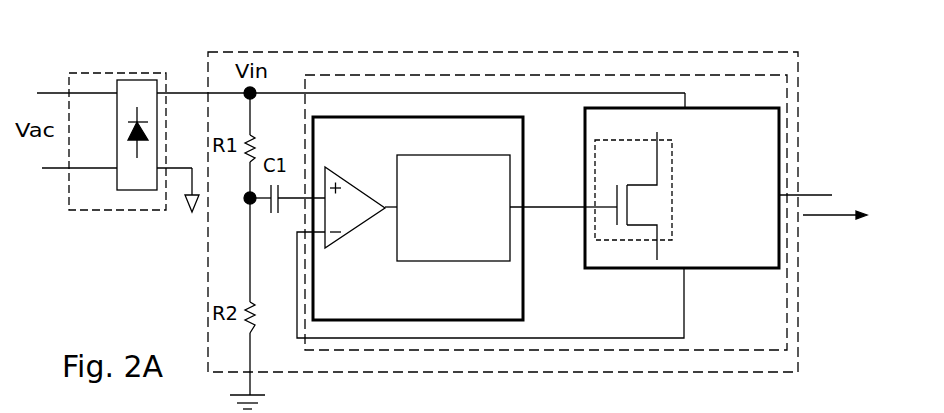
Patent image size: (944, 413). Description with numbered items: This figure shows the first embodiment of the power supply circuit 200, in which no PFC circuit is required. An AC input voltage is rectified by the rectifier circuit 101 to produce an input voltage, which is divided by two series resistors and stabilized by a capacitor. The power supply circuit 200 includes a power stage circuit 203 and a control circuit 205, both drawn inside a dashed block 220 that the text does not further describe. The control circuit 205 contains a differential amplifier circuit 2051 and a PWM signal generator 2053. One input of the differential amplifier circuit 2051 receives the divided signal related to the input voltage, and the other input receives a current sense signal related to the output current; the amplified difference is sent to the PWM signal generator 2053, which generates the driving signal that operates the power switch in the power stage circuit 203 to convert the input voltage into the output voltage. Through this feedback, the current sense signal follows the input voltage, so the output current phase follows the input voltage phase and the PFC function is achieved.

The rectifier circuit 101 is at (110, 199).
The power supply circuit 200 is at (788, 52).
The control chip 220 is at (778, 341).
The control circuit 205 is at (503, 291).
The differential amplifier circuit 2051 is at (337, 169).
The pulse width modulation (PWM) signal generator 2053 is at (477, 256).
The power stage circuit 203 is at (764, 140).